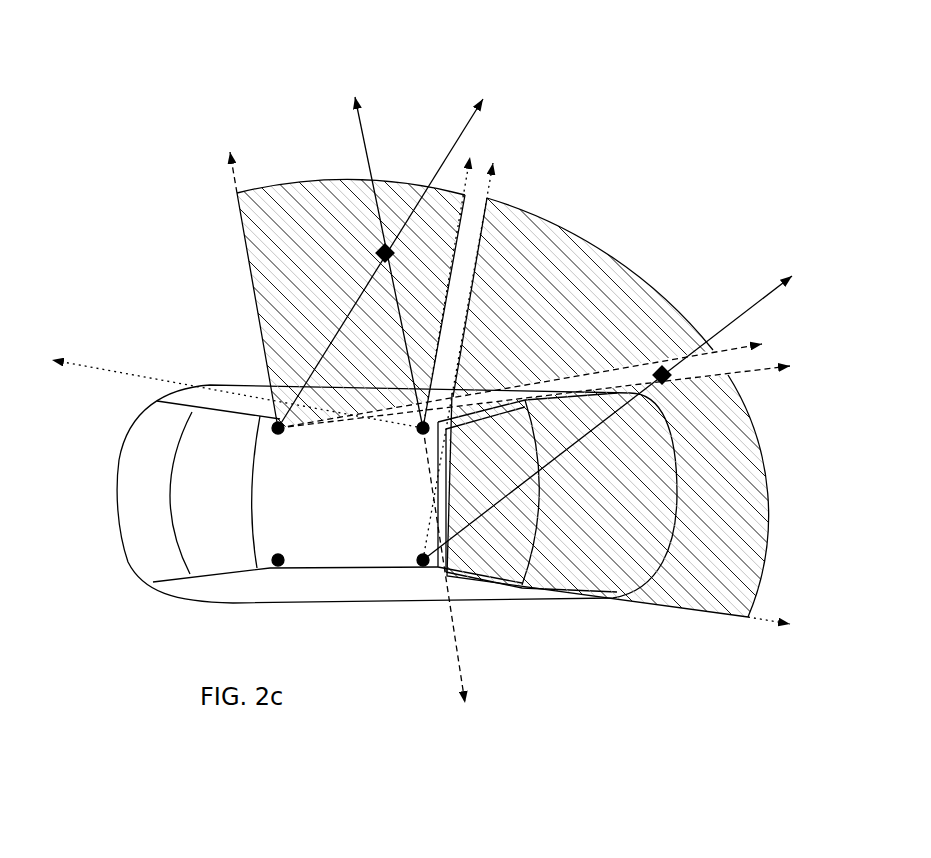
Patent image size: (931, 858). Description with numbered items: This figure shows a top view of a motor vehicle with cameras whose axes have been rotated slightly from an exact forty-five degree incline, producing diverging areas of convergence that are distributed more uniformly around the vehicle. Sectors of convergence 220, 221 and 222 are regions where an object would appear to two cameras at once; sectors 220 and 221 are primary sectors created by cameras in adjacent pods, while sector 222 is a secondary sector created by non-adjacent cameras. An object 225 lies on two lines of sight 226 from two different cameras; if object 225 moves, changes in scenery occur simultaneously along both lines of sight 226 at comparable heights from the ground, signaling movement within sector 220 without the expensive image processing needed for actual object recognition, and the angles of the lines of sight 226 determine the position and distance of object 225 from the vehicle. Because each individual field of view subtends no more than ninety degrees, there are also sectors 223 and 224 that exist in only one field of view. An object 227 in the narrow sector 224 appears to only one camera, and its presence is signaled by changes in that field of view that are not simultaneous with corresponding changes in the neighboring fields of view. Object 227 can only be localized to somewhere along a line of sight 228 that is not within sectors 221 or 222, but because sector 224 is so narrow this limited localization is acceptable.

The sector of convergence 220 is at (334, 182).
The sector of convergence 221 is at (768, 527).
The sector of convergence 222 is at (613, 252).
The single-field-of-view sector 223 is at (470, 215).
The single-field-of-view sector 224 is at (768, 355).
The object 225 is at (385, 253).
The lines of sight 226 is at (448, 155).
The object 227 is at (662, 372).
The line of sight 228 is at (780, 284).